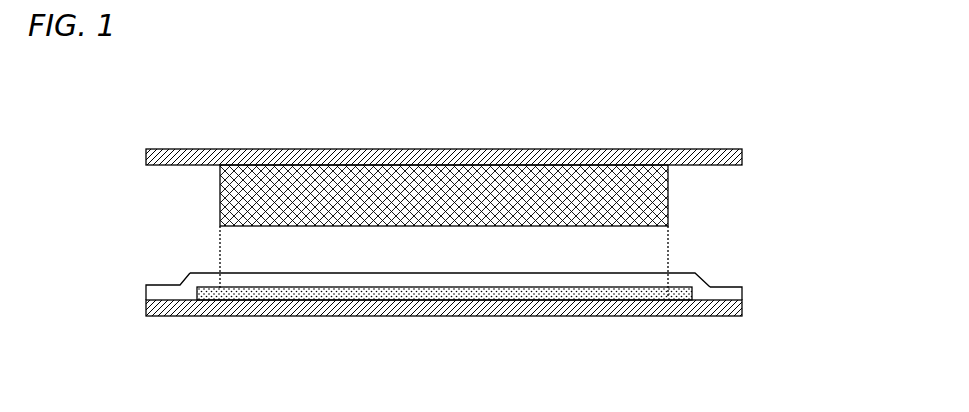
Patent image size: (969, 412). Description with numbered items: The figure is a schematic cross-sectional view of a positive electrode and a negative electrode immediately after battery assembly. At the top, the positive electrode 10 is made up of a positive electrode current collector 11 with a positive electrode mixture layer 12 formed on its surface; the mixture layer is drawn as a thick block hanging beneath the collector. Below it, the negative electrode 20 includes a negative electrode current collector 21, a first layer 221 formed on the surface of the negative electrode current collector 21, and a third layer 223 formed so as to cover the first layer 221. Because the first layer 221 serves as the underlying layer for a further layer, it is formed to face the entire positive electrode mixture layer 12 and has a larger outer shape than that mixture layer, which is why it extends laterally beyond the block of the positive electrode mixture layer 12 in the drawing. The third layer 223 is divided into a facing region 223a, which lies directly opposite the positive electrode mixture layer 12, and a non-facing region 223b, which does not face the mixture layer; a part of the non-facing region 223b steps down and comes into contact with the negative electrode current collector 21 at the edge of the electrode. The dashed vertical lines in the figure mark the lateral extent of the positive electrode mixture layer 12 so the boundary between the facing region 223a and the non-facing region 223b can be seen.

The positive electrode 10 is at (471, 136).
The positive electrode current collector 11 is at (146, 156).
The positive electrode mixture layer 12 is at (236, 210).
The negative electrode 20 is at (471, 265).
The negative electrode current collector 21 is at (743, 308).
The first layer 221 is at (743, 288).
The third layer 223 is at (697, 276).
The facing region 223a is at (318, 279).
The non-facing region 223b is at (172, 292).